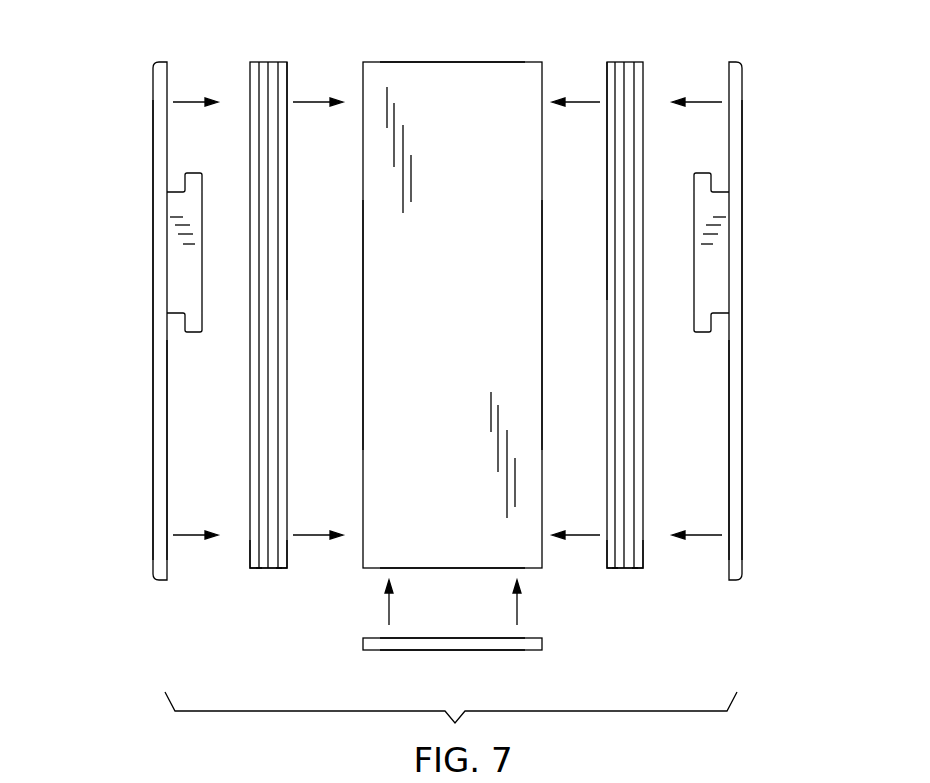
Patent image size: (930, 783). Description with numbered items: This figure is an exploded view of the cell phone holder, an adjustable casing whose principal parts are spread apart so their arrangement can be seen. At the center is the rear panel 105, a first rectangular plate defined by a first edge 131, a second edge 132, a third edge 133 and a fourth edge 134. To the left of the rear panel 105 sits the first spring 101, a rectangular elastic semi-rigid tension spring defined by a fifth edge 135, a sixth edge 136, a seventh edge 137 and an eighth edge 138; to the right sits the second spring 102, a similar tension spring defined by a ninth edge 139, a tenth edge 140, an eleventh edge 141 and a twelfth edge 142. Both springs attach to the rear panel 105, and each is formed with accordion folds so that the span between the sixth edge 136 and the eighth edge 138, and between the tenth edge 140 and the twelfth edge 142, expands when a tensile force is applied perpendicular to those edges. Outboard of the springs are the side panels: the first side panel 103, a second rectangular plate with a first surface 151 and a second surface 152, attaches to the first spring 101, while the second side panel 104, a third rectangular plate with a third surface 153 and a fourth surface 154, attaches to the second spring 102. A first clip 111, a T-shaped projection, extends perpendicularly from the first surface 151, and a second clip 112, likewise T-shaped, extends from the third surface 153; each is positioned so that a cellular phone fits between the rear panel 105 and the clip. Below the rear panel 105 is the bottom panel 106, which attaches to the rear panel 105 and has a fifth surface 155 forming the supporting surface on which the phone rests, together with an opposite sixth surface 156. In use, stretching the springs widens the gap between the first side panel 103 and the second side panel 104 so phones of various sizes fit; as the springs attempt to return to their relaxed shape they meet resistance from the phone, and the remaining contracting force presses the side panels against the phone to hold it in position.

The first spring 101 is at (262, 62).
The second spring 102 is at (633, 62).
The first side panel 103 is at (156, 62).
The second side panel 104 is at (733, 62).
The rear panel 105 is at (479, 62).
The bottom panel 106 is at (485, 650).
The first clip 111 is at (202, 215).
The second clip 112 is at (694, 215).
The first edge 131 is at (437, 62).
The second edge 132 is at (542, 277).
The third edge 133 is at (460, 568).
The fourth edge 134 is at (363, 318).
The fifth edge 135 is at (277, 62).
The sixth edge 136 is at (287, 550).
The seventh edge 137 is at (270, 568).
The eighth edge 138 is at (252, 550).
The ninth edge 139 is at (618, 62).
The tenth edge 140 is at (643, 550).
The eleventh edge 141 is at (625, 568).
The twelfth edge 142 is at (607, 550).
The first surface 151 is at (167, 470).
The second surface 152 is at (153, 395).
The third surface 153 is at (729, 470).
The fourth surface 154 is at (742, 395).
The fifth surface 155 is at (420, 638).
The sixth surface 156 is at (405, 650).